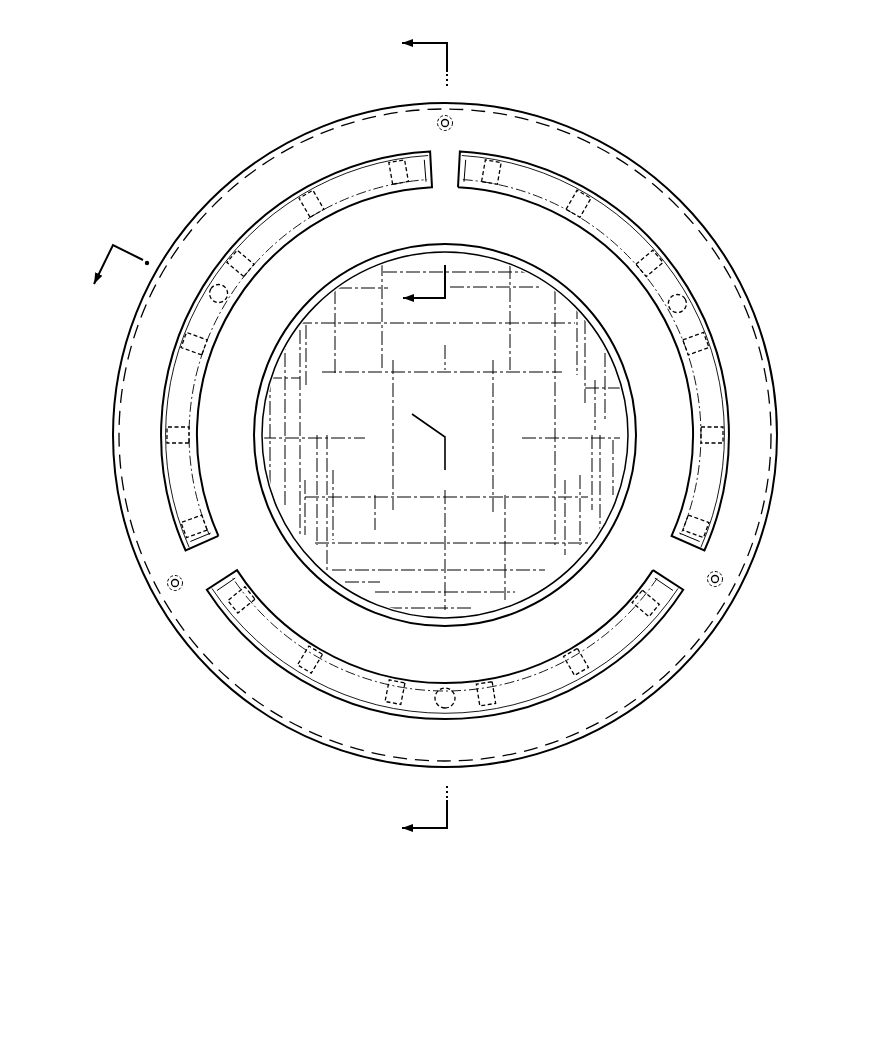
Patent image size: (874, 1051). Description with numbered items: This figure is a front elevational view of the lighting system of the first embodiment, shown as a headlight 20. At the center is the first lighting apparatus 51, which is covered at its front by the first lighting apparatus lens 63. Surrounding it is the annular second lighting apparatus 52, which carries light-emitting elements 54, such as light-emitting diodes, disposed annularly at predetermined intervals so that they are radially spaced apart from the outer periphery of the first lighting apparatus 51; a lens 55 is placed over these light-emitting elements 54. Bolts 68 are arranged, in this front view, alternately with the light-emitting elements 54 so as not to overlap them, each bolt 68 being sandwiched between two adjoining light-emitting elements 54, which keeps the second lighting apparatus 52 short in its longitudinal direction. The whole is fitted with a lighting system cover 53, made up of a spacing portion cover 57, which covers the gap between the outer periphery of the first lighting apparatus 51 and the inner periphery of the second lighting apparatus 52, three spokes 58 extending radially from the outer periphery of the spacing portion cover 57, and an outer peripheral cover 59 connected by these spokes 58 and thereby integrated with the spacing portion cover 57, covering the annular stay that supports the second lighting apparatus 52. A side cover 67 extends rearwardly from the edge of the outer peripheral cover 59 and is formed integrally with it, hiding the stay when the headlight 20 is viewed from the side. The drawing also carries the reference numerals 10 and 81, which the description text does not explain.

The lighting assembly 10 is at (92, 92).
The headlight 20 is at (655, 128).
The first lighting apparatus 51 is at (640, 417).
The second lighting apparatus 52 is at (686, 272).
The lighting system cover 53 is at (608, 133).
The light-emitting elements 54 is at (240, 257).
The lens 55 is at (220, 282).
The spacing portion cover 57 is at (680, 417).
The spokes 58 is at (465, 160).
The outer peripheral cover 59 is at (655, 658).
The first lighting apparatus lens 63 is at (412, 583).
The side cover 67 is at (337, 750).
The bolts 68 is at (205, 290).
The fastener hole 81 is at (438, 113).